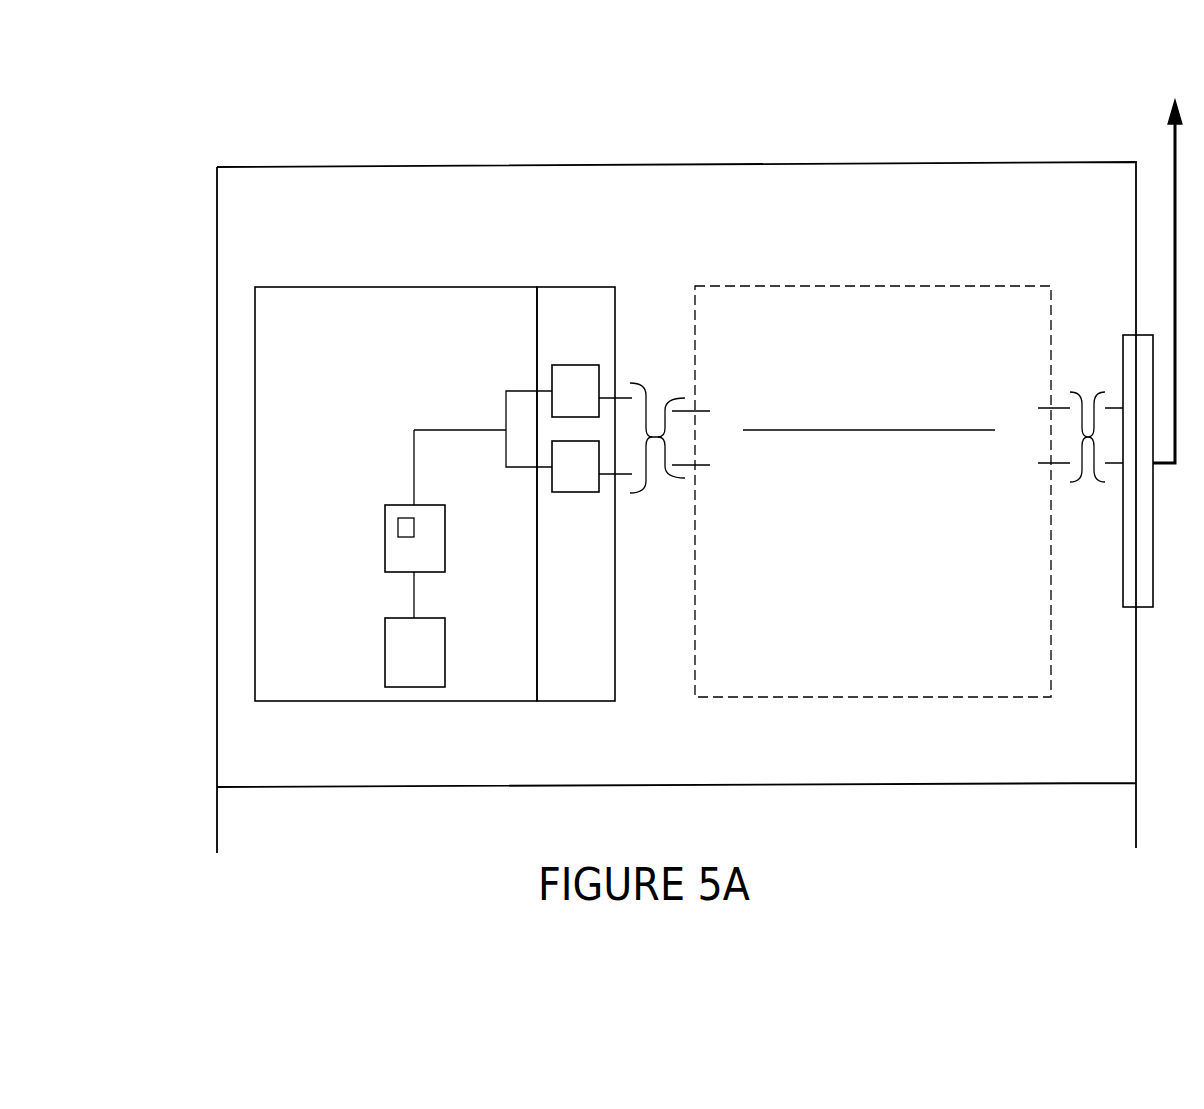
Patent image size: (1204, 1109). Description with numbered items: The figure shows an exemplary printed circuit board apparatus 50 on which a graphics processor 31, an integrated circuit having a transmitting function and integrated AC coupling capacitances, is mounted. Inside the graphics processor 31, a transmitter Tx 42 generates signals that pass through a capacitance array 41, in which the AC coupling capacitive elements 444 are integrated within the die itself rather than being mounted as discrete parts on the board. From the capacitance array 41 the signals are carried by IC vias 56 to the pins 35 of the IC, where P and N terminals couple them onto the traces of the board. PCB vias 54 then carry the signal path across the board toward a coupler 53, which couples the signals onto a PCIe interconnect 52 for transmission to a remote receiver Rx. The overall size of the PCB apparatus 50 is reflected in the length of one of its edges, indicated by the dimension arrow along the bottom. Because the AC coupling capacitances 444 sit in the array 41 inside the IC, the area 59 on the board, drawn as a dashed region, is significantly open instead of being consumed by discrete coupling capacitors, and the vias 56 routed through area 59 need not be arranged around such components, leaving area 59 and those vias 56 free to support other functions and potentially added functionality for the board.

The graphics processor 31 is at (281, 355).
The pins 35 is at (586, 675).
The capacitance array 41 is at (200, 520).
The transmitter (Tx) 42 is at (425, 678).
The AC coupling capacitive element 444 is at (405, 518).
The PCB apparatus 50 is at (217, 822).
The PCIe interconnect 52 is at (1173, 138).
The coupler 53 is at (1123, 608).
The PCB vias 54 is at (793, 430).
The vias 56 is at (447, 428).
The area 59 is at (720, 697).